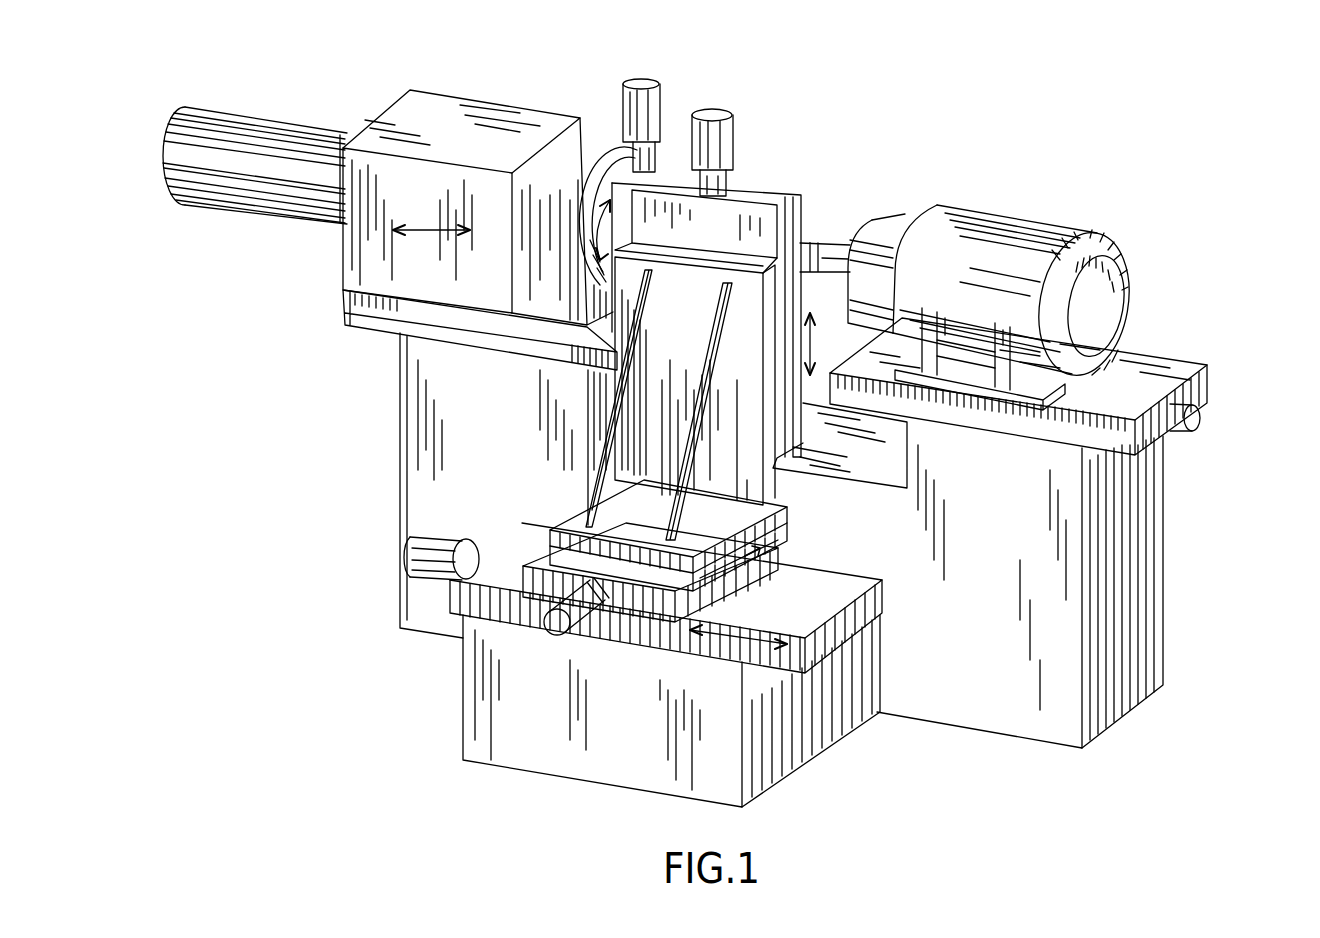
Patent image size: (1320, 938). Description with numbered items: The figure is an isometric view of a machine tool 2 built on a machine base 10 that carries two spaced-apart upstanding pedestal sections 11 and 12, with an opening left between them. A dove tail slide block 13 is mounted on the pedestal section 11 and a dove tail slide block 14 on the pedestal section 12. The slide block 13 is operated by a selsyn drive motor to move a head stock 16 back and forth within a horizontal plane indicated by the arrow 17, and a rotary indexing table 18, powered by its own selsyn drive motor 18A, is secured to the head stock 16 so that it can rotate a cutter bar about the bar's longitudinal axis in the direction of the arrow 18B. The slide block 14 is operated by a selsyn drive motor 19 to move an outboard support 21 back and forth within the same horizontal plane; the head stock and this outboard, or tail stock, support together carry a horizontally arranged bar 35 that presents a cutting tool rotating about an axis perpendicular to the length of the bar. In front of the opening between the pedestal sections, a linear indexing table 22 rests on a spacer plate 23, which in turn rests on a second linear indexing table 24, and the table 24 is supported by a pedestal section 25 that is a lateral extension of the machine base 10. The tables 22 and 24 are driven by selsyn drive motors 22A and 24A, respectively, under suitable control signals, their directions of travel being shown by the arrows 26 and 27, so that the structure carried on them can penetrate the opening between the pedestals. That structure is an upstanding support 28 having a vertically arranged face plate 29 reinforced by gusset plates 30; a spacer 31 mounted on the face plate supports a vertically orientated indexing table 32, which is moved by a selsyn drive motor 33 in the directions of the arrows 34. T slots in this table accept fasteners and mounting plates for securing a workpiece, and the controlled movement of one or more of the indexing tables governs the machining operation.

The optical scanning apparatus 2 is at (870, 90).
The machine base 10 is at (1140, 705).
The pedestal section 11 is at (500, 436).
The pedestal section 12 is at (980, 546).
The dove tail slide block 13 is at (345, 312).
The dove tail slide block 14 is at (1212, 378).
The head stock 16 is at (503, 108).
The arrow 17 is at (438, 236).
The rotary indexing table 18 is at (618, 140).
The selsyn drive motor 18A is at (658, 100).
The arrow 18B is at (585, 232).
The selsyn drive motor 19 is at (1190, 435).
The motor 21 is at (1023, 220).
The linear indexing table 22 is at (736, 520).
The selsyn drive motor 22A is at (553, 632).
The spacer plate 23 is at (760, 550).
The linear indexing table 24 is at (880, 595).
The selsyn drive motor 24A is at (430, 535).
The pedestal section 25 is at (616, 714).
The slide 26 is at (750, 580).
The arrow 27 is at (700, 648).
The upstanding support 28 is at (586, 505).
The face plate 29 is at (693, 300).
The gusset plates 30 is at (697, 388).
The detector block 31 is at (677, 248).
The indexing table 32 is at (793, 193).
The selsyn drive motor 33 is at (733, 123).
The arrows 34 is at (812, 340).
The bar 35 is at (825, 246).